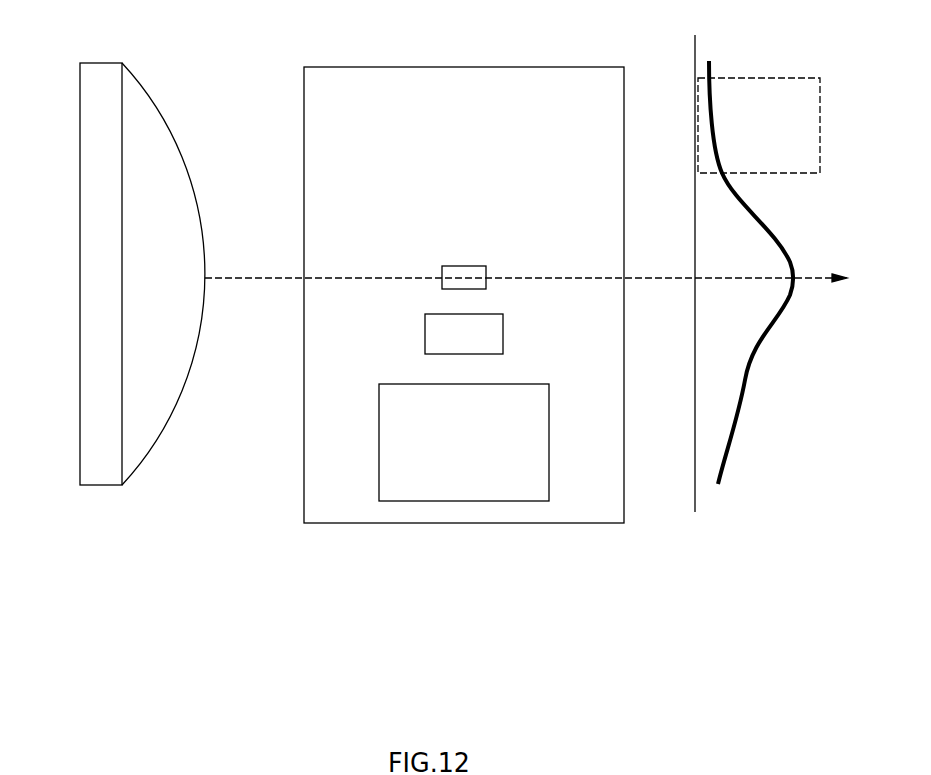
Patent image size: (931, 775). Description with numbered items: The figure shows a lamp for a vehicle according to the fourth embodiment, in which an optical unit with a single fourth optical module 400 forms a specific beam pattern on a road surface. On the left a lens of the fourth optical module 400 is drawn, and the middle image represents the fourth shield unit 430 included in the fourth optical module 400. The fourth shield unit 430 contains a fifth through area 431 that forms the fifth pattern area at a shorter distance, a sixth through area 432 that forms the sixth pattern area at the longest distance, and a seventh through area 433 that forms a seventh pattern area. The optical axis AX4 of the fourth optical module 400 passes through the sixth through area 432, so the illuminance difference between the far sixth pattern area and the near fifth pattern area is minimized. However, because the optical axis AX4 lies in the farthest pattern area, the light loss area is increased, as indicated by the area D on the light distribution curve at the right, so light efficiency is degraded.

The fourth optical module 400 is at (88, 157).
The fourth shield unit 430 is at (593, 523).
The fifth through area 431 is at (520, 384).
The sixth through area 432 is at (472, 266).
The seventh through area 433 is at (503, 328).
The area D is at (795, 78).
The optical axis AX4 is at (545, 278).